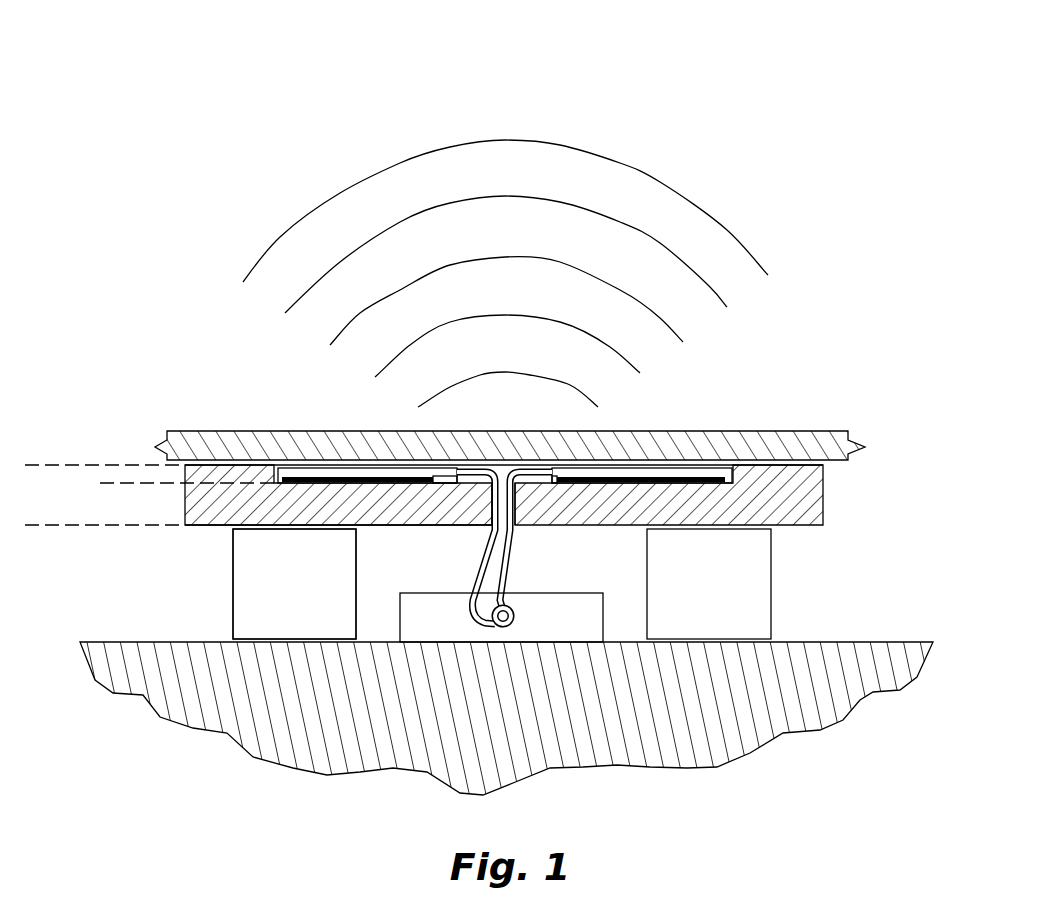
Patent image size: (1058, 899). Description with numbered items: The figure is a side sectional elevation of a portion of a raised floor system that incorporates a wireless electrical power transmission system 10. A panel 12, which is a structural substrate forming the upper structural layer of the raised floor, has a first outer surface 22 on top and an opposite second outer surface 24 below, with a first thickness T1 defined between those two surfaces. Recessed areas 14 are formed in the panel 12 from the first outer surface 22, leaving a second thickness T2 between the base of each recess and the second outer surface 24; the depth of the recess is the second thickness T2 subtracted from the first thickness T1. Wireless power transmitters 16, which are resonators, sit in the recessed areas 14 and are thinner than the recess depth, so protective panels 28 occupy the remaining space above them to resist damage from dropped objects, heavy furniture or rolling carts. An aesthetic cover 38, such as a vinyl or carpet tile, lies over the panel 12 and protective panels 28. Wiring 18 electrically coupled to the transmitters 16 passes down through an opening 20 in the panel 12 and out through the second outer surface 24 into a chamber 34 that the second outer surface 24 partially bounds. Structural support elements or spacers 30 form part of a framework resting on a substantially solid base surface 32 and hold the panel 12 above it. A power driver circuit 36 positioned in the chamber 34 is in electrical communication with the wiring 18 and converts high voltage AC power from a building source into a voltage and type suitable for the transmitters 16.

The wireless electrical power transmission system 10 is at (753, 110).
The panel 12 is at (823, 502).
The recessed areas 14 is at (362, 477).
The wireless power transmitters 16 is at (323, 477).
The wiring 18 is at (483, 548).
The opening or bore 20 is at (503, 480).
The first outer surface 22 is at (786, 460).
The second outer surface 24 is at (209, 528).
The protective panels 28 is at (286, 483).
The structural support elements or spacers 30 is at (233, 613).
The base surface 32 is at (128, 640).
The chamber 34 is at (378, 582).
The power driver circuit 36 is at (600, 600).
The aesthetic cover 38 is at (198, 430).
The first thickness T1 is at (36, 468).
The second thickness T2 is at (117, 485).